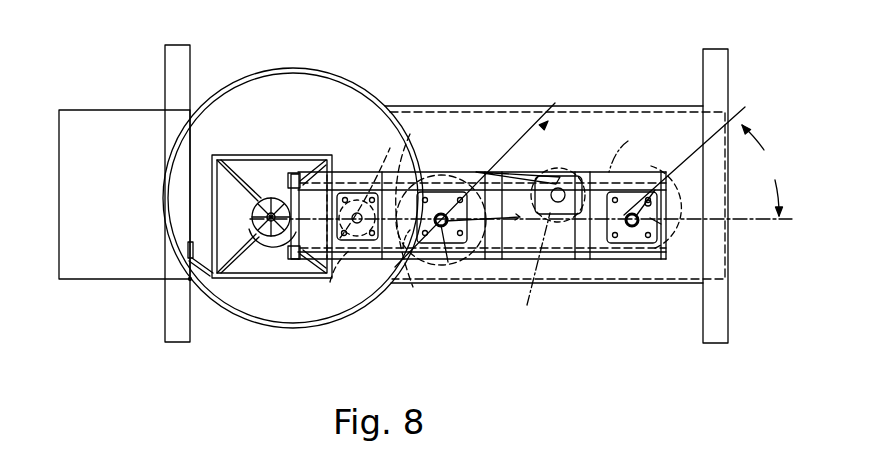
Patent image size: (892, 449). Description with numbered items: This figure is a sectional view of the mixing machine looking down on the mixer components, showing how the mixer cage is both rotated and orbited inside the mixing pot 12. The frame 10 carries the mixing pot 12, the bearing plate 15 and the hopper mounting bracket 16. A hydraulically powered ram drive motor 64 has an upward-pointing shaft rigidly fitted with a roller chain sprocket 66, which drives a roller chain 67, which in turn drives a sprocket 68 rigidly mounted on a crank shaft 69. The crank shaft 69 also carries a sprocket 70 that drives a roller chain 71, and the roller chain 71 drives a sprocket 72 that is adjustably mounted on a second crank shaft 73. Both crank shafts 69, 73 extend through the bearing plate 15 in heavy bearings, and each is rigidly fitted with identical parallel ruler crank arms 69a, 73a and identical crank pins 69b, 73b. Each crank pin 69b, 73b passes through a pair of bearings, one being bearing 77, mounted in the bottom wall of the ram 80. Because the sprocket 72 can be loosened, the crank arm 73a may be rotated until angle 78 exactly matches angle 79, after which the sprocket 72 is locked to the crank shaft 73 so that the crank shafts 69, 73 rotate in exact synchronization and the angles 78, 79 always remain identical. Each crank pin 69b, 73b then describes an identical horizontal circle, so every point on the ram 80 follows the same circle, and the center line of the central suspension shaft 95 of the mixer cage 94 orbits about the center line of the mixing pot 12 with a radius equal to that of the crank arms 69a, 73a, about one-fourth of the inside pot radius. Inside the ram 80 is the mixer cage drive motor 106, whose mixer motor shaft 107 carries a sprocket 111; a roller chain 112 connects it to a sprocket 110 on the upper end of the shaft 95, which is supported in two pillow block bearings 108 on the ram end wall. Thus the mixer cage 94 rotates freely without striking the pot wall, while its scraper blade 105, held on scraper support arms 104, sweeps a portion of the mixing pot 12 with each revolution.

The frame 10 is at (738, 308).
The mixing pot 12 is at (292, 68).
The bearing plate 15 is at (605, 122).
The hopper mounting bracket 16 is at (117, 110).
The ram drive motor 64 is at (567, 230).
The roller chain sprocket 66 is at (502, 211).
The roller chain 67 is at (532, 269).
The sprocket 68 is at (507, 170).
The sprocket 70 is at (558, 182).
The crank shaft 69 is at (466, 174).
The crank arm 69a is at (446, 262).
The crank pin 69b is at (404, 250).
The roller chain 71 is at (630, 147).
The sprocket 72 is at (676, 206).
The crank shaft 73 is at (660, 186).
The crank arm 73a is at (663, 225).
The crank pin 73b is at (640, 224).
The bearing 77 is at (418, 190).
The angle 78 is at (703, 161).
The angle 79 is at (587, 212).
The ram 80 is at (345, 166).
The mixer cage 94 is at (253, 150).
The central suspension shaft 95 is at (256, 212).
The scraper support arm 104 is at (189, 280).
The scraper blade 105 is at (188, 246).
The mixer cage drive motor 106 is at (406, 144).
The mixer motor shaft 107 is at (357, 223).
The pillow block bearing 108 is at (276, 246).
The sprocket 110 is at (289, 184).
The sprocket 111 is at (333, 281).
The roller chain 112 is at (319, 198).